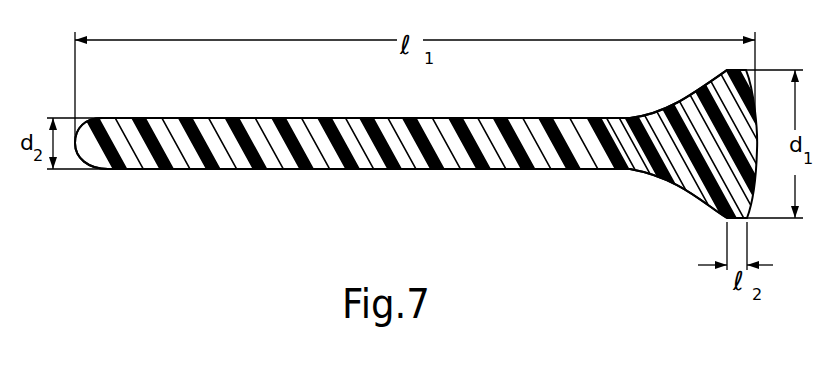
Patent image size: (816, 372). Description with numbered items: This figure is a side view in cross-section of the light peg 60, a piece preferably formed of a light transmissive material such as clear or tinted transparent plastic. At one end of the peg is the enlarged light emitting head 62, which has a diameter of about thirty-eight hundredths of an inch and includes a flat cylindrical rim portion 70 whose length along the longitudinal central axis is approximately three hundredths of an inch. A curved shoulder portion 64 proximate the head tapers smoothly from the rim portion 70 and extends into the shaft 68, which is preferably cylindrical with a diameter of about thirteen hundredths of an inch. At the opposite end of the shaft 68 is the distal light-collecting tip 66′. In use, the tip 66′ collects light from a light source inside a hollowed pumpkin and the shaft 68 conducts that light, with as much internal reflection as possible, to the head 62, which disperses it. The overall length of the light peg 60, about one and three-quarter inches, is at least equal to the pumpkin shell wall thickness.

The light peg 60 is at (483, 192).
The light emitting head 62 is at (712, 190).
The curved shoulder portion 64 is at (678, 110).
The light-collecting tip 66′ is at (110, 157).
The shaft 68 is at (296, 169).
The flat cylindrical rim portion 70 is at (738, 219).